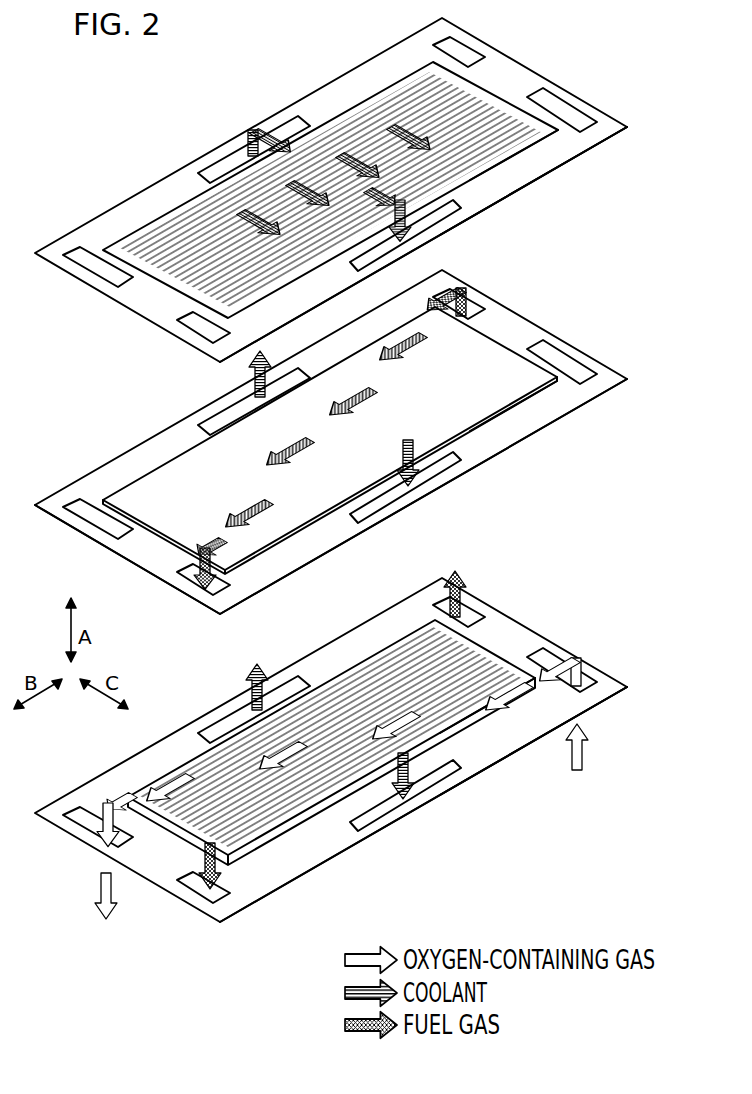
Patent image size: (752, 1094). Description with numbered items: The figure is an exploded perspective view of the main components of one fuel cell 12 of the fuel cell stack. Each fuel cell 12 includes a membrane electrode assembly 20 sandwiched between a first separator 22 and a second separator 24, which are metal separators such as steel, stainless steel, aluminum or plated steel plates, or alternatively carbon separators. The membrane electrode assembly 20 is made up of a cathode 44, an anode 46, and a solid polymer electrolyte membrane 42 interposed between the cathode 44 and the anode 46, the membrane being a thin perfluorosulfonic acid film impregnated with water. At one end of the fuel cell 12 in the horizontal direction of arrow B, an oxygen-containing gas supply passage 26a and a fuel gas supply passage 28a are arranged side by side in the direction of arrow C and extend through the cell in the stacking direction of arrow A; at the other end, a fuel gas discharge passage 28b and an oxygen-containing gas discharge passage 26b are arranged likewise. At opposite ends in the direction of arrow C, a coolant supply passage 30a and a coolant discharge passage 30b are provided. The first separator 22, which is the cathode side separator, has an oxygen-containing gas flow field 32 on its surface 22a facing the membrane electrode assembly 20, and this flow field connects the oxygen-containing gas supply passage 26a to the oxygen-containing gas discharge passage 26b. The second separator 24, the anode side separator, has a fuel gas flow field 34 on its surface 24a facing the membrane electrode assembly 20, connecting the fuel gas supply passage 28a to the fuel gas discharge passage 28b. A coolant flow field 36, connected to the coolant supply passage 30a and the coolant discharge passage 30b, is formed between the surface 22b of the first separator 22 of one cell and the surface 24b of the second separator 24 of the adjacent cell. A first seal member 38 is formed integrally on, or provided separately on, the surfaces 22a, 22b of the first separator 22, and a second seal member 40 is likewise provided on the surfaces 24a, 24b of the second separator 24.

The fuel cell 12 is at (127, 89).
The membrane electrode assembly 20 is at (528, 316).
The first separator 22 is at (529, 622).
The surface of the first separator 22a is at (483, 757).
The surface of the first separator 22b is at (520, 733).
The second separator 24 is at (530, 63).
The surface of the second separator 24a is at (520, 176).
The surface of the second separator 24b is at (486, 197).
The oxygen-containing gas supply passage 26a is at (588, 678).
The oxygen-containing gas discharge passage 26b is at (77, 818).
The fuel gas supply passage 28a is at (475, 622).
The fuel gas discharge passage 28b is at (197, 890).
The coolant supply passage 30a is at (217, 728).
The coolant discharge passage 30b is at (377, 808).
The oxygen-containing gas flow field 32 is at (287, 827).
The fuel gas flow field 34 is at (355, 102).
The coolant flow field 36 is at (148, 242).
The first seal member 38 is at (622, 692).
The second seal member 40 is at (627, 132).
The solid polymer electrolyte membrane 42 is at (547, 413).
The cathode 44 is at (462, 425).
The anode 46 is at (487, 402).